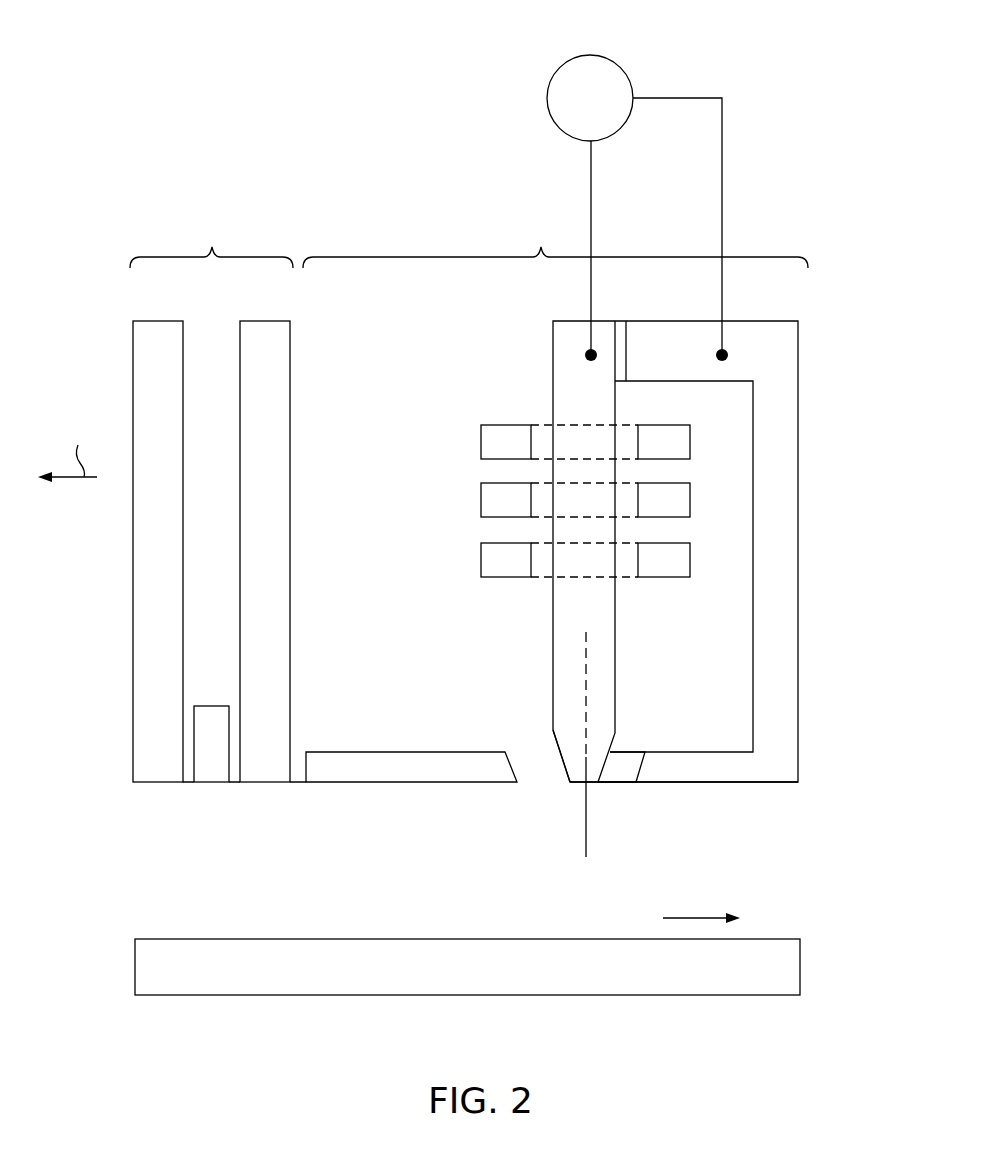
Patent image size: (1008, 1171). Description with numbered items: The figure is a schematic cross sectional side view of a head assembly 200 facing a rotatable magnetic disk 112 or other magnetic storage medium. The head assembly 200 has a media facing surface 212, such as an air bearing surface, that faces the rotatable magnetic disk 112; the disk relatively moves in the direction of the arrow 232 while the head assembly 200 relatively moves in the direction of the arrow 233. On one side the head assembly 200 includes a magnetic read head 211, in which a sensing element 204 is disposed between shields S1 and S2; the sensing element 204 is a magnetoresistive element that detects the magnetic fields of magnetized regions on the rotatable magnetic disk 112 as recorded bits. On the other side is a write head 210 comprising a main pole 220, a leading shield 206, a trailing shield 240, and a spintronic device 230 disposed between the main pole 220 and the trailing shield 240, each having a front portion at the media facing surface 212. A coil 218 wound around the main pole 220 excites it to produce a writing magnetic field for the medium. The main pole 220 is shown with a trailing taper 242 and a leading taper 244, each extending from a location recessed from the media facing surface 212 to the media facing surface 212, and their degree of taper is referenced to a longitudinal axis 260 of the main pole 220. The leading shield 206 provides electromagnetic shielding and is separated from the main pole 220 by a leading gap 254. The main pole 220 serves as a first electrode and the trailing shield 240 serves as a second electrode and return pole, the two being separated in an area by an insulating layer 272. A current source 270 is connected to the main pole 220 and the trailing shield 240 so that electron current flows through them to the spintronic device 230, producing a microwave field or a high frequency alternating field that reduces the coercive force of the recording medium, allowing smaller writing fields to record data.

The head assembly 200 is at (168, 118).
The magnetic read head 211 is at (211, 238).
The write head 210 is at (555, 238).
The shield S1 is at (153, 768).
The shield S2 is at (262, 768).
The sensing element 204 is at (210, 772).
The leading shield 206 is at (350, 785).
The leading gap 254 is at (538, 782).
The arrow 233 is at (69, 447).
The current source 270 is at (619, 62).
The insulating layer 272 is at (627, 352).
The trailing shield 240 is at (767, 768).
The media facing surface 212 is at (693, 783).
The main pole 220 is at (598, 615).
The leading taper 244 is at (553, 738).
The trailing taper 242 is at (615, 733).
The spintronic device 230 is at (618, 763).
The coil 218 is at (497, 578).
The longitudinal axis 260 is at (586, 848).
The arrow 232 is at (692, 918).
The rotatable magnetic disk 112 is at (800, 962).